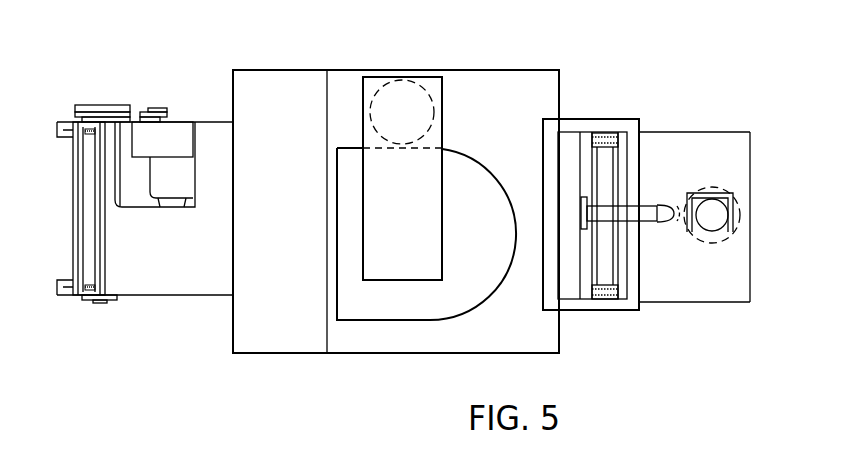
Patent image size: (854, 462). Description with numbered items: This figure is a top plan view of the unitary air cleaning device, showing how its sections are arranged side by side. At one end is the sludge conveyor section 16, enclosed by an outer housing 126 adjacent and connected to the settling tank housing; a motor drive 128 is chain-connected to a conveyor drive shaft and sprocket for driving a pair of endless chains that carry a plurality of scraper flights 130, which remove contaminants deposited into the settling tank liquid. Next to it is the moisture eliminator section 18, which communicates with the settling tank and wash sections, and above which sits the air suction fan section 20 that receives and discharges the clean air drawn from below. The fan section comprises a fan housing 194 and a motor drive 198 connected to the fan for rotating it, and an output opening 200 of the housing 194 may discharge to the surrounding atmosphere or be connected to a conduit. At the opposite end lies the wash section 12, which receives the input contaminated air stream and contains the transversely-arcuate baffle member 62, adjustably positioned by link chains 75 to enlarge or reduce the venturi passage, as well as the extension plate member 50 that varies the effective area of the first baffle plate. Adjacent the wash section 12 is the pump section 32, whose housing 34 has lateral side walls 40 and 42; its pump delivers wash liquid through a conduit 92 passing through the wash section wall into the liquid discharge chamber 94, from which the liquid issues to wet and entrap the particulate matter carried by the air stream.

The wash section 12 is at (598, 311).
The sludge conveyor section 16 is at (148, 298).
The moisture eliminator section 18 is at (525, 68).
The air suction fan section 20 is at (500, 291).
The pump section 32 is at (739, 207).
The housing 34 is at (756, 148).
The lateral side wall 40 is at (702, 303).
The lateral side wall 42 is at (672, 132).
The extension plate member 50 is at (583, 269).
The transversely-arcuate baffle member 62 is at (618, 160).
The link chains 75 is at (612, 135).
The conduit 92 is at (614, 207).
The liquid discharge chamber 94 is at (572, 142).
The outer housing 126 is at (205, 122).
The motor drive 128 is at (148, 135).
The scraper flights 130 is at (95, 245).
The fan housing 194 is at (482, 181).
The motor drive 198 is at (425, 68).
The output opening 200 is at (337, 191).